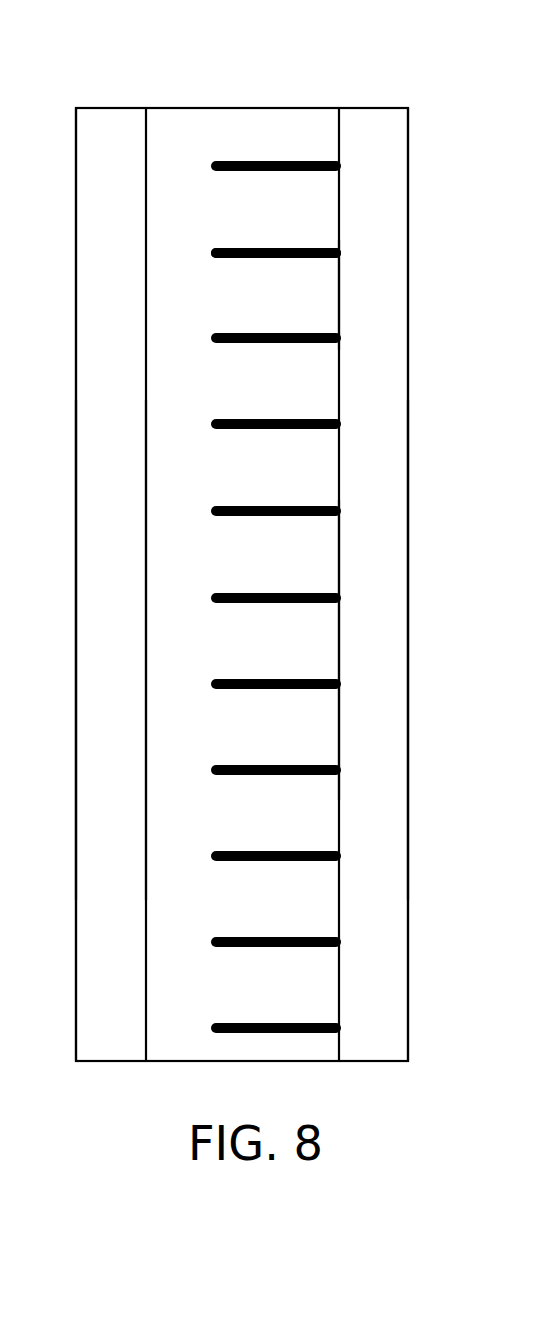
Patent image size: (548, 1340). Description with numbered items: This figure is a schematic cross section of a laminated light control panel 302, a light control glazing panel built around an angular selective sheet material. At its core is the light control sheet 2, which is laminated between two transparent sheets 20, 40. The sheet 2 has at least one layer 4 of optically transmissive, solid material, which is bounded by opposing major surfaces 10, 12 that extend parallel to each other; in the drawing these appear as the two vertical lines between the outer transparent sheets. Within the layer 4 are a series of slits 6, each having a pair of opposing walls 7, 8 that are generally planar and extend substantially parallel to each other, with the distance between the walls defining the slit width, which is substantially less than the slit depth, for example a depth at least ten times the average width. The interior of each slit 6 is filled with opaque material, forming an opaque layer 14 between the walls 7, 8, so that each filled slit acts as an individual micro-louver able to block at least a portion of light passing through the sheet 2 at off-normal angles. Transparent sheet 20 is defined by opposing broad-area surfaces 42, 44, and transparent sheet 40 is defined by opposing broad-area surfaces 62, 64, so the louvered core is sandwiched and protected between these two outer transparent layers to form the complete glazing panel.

The laminated light control panel 302 is at (292, 86).
The light control sheet 2 is at (202, 108).
The layer 4 is at (194, 995).
The slit 6 is at (222, 258).
The wall 7 is at (262, 248).
The wall 8 is at (300, 258).
The major surface 10 is at (339, 487).
The major surface 12 is at (146, 455).
The opaque layer 14 is at (341, 252).
The transparent sheet 20 is at (130, 808).
The transparent sheet 40 is at (398, 808).
The broad-area surface 42 is at (76, 690).
The broad-area surface 44 is at (146, 623).
The broad-area surface 62 is at (339, 667).
The broad-area surface 64 is at (408, 572).